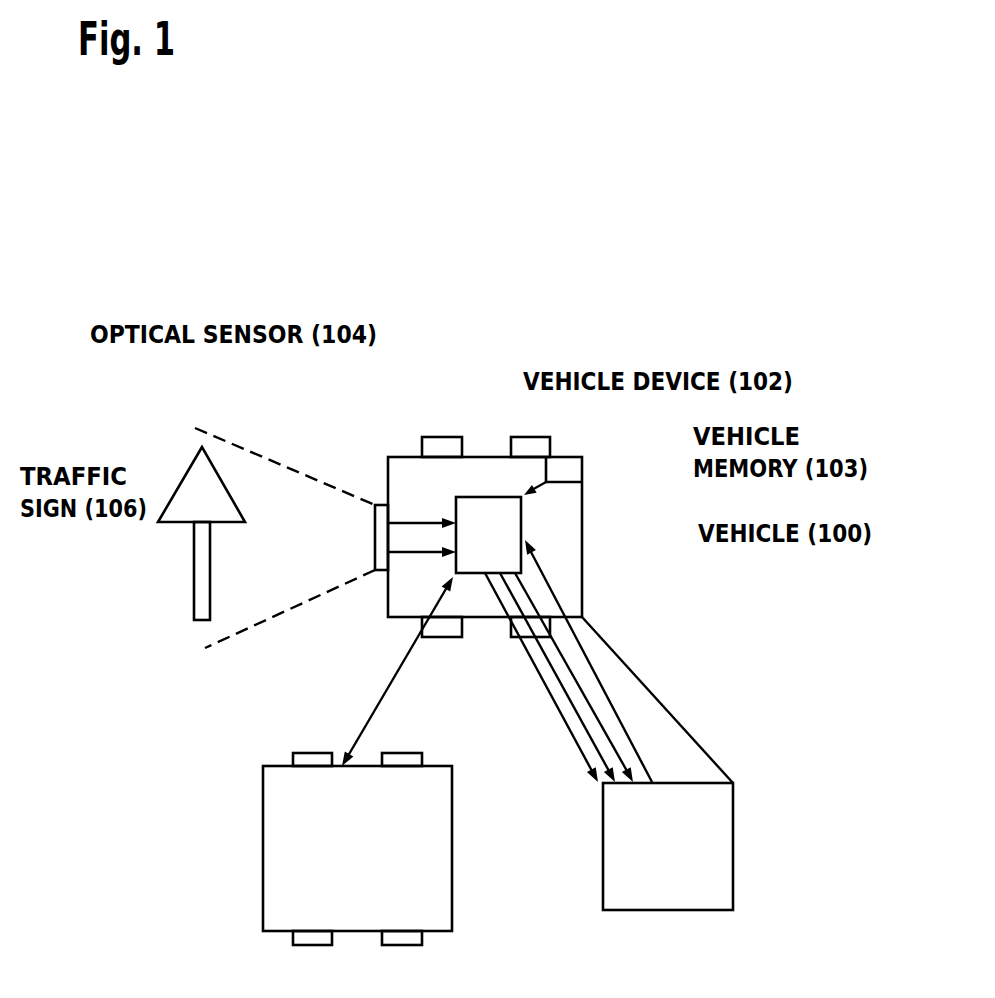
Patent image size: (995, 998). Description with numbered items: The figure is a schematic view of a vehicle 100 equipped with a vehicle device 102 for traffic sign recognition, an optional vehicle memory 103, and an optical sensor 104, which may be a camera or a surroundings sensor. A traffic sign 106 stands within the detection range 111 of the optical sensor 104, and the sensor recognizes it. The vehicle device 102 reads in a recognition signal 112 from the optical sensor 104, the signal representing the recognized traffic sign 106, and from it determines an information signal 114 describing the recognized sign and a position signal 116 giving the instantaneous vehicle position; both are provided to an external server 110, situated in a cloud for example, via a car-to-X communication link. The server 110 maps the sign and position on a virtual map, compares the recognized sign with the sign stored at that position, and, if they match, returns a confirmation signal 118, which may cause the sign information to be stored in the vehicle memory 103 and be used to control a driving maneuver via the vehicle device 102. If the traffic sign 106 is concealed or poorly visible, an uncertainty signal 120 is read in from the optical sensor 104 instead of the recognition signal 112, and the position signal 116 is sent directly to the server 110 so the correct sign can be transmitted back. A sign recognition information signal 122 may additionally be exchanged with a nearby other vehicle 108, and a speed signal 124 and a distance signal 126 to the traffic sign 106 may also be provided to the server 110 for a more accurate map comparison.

The vehicle 100 is at (582, 533).
The vehicle device 102 is at (485, 497).
The vehicle memory 103 is at (582, 457).
The optical sensor 104 is at (382, 505).
The traffic sign 106 is at (177, 482).
The other vehicle 108 is at (263, 930).
The external server 110 is at (733, 910).
The detection range 111 is at (301, 510).
The recognition signal 112 is at (418, 523).
The information signal 114 is at (533, 662).
The position signal 116 is at (572, 705).
The confirmation signal 118 is at (683, 722).
The uncertainty signal 120 is at (420, 553).
The sign recognition information signal 122 is at (383, 690).
The speed signal 124 is at (612, 742).
The distance signal 126 is at (603, 688).